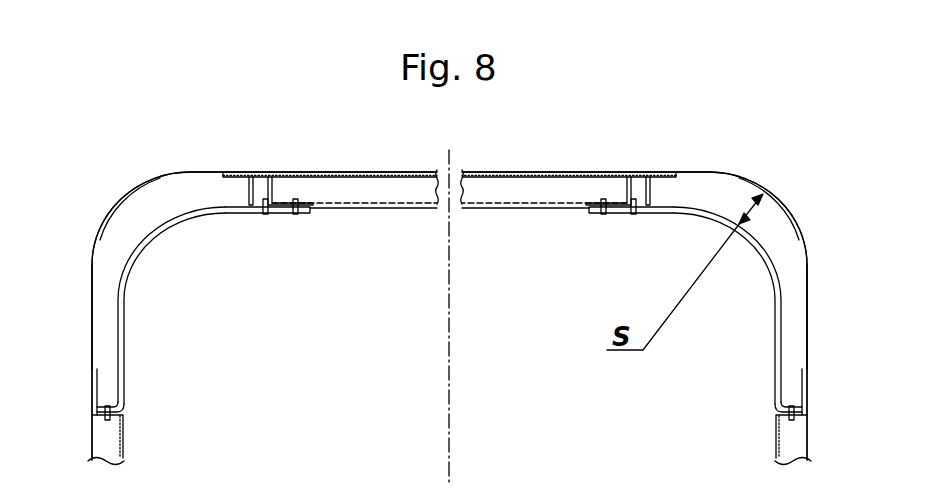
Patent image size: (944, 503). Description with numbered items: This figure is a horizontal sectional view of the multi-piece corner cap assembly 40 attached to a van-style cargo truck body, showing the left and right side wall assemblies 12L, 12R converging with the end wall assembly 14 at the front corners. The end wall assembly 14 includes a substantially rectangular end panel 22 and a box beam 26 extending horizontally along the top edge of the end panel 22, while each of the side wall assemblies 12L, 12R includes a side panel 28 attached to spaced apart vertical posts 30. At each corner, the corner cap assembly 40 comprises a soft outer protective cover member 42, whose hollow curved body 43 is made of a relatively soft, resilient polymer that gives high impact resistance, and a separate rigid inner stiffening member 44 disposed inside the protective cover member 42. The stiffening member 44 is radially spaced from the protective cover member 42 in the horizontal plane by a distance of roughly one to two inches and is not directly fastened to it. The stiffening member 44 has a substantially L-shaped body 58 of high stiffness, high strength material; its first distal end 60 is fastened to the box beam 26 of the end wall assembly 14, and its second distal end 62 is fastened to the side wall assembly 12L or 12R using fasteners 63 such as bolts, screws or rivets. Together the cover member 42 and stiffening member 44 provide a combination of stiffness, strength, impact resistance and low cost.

The left side wall assembly 12L is at (82, 431).
The right side wall assembly 12R is at (820, 431).
The end wall assembly 14 is at (336, 167).
The end panel 22 is at (400, 172).
The box beam 26 is at (528, 172).
The side panel 28 is at (92, 448).
The vertical post 30 is at (123, 440).
The multi-piece corner cap assembly 40 is at (154, 174).
The protective cover member 42 is at (113, 201).
The hollow curved body 43 is at (92, 265).
The stiffening member 44 is at (159, 262).
The L-shaped body 58 is at (229, 215).
The first distal end 60 is at (292, 215).
The second distal end 62 is at (112, 413).
The fasteners 63 is at (598, 198).